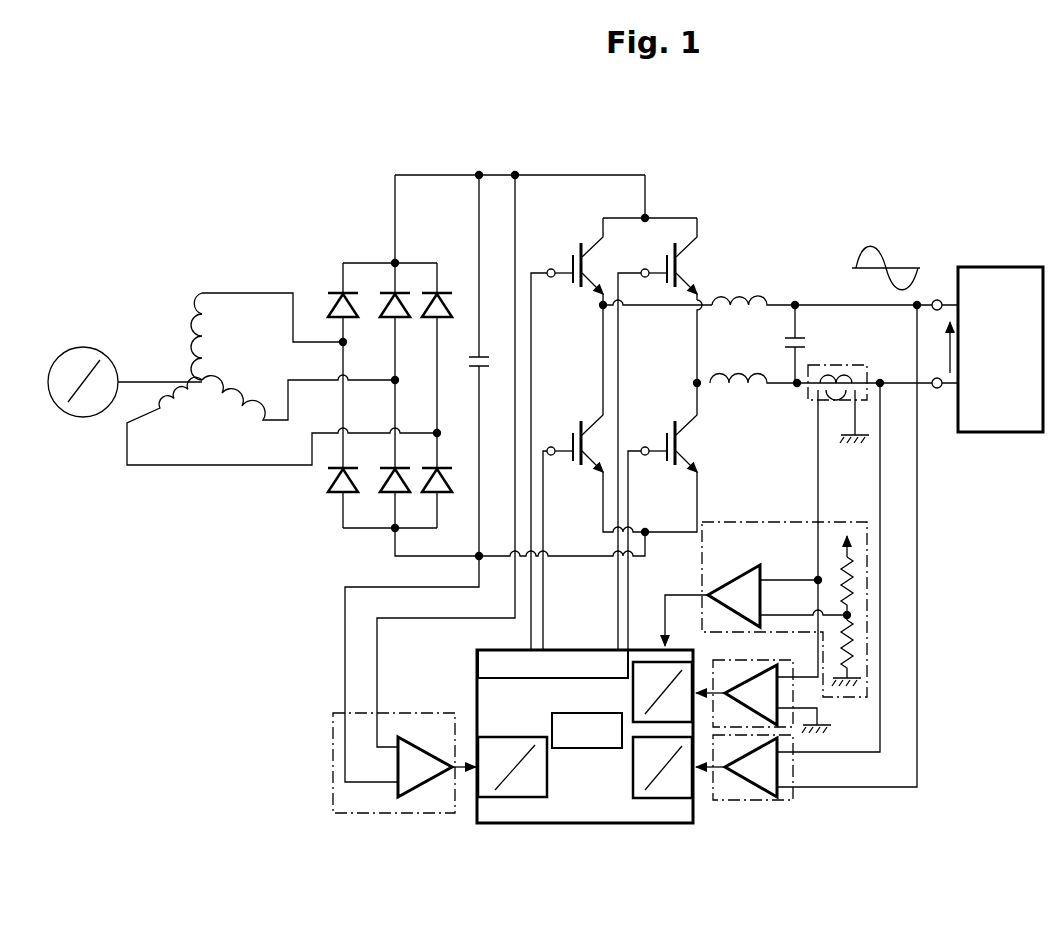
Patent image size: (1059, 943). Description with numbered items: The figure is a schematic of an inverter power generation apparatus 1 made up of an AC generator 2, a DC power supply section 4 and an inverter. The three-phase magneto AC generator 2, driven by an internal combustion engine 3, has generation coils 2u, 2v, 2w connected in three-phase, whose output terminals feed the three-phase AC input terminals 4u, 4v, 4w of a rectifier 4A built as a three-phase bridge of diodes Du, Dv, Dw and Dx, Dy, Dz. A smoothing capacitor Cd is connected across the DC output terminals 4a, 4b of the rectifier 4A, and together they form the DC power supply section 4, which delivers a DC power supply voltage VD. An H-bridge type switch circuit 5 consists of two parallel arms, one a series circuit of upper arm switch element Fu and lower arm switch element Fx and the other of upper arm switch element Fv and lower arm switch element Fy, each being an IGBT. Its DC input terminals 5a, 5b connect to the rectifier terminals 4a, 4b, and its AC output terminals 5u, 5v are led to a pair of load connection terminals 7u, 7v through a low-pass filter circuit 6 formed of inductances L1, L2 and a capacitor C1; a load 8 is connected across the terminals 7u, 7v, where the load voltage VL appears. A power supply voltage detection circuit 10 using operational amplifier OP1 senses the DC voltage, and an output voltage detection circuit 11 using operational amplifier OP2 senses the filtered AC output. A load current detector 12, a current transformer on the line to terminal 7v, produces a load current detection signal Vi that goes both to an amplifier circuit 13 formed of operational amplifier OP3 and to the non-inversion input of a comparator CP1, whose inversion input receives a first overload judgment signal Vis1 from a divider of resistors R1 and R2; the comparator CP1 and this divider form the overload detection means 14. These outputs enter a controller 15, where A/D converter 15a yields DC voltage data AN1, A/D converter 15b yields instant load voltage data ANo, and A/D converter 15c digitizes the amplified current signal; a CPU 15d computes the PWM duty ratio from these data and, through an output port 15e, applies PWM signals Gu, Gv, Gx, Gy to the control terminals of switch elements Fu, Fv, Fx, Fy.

The inverter power generation apparatus 1 is at (733, 192).
The three-phase magneto AC generator 2 is at (282, 338).
The generation coil 2u is at (207, 318).
The generation coil 2v is at (248, 402).
The generation coil 2w is at (172, 404).
The internal combustion engine 3 is at (86, 347).
The DC power supply section 4 is at (468, 355).
The rectifier 4A is at (382, 366).
The DC output terminal of the rectifier 4a is at (393, 240).
The DC output terminal of the rectifier 4b is at (501, 558).
The three-phase AC input terminal of the rectifier 4u is at (346, 344).
The three-phase AC input terminal of the rectifier 4v is at (398, 383).
The three-phase AC input terminal of the rectifier 4w is at (440, 432).
The H-bridge type switch circuit 5 is at (631, 371).
The DC input terminal of the switch circuit 5a is at (647, 206).
The DC input terminal of the switch circuit 5b is at (649, 537).
The AC output terminal of the switch circuit 5u is at (599, 306).
The AC output terminal of the switch circuit 5v is at (694, 381).
The low-pass filter circuit 6 is at (834, 325).
The load connection terminal 7u is at (937, 299).
The load connection terminal 7v is at (936, 389).
The load 8 is at (996, 266).
The power supply voltage detection circuit 10 is at (405, 520).
The output voltage detection circuit 11 is at (808, 577).
The load current detector 12 is at (870, 374).
The amplifier circuit 13 is at (832, 569).
The overload detection means 14 is at (813, 584).
The controller 15 is at (551, 736).
The A/D converter 15a is at (513, 798).
The A/D converter 15b is at (633, 775).
The A/D converter 15c is at (635, 700).
The CPU 15d is at (556, 715).
The output port 15e is at (610, 650).
The diode Du is at (333, 300).
The diode Dv is at (405, 290).
The diode Dw is at (445, 295).
The diode Dx is at (333, 480).
The diode Dy is at (385, 492).
The diode Dz is at (445, 497).
The smoothing capacitor Cd is at (474, 359).
The DC power supply voltage VD is at (520, 158).
The upper arm switch element Fu is at (598, 246).
The upper arm switch element Fv is at (688, 253).
The lower arm switch element Fx is at (596, 421).
The lower arm switch element Fy is at (690, 436).
The PWM signal Gu is at (545, 444).
The PWM signal Gv is at (631, 444).
The PWM signal Gx is at (546, 533).
The PWM signal Gy is at (636, 533).
The inductance L1 is at (747, 310).
The inductance L2 is at (752, 390).
The capacitor C1 is at (806, 340).
The load voltage VL is at (935, 347).
The comparator CP1 is at (726, 588).
The load current detection signal Vi is at (791, 564).
The first overload judgment signal Vis1 is at (805, 602).
The resistor R1 is at (852, 575).
The resistor R2 is at (852, 645).
The operational amplifier OP1 is at (420, 744).
The operational amplifier OP2 is at (742, 776).
The operational amplifier OP3 is at (795, 711).
The data of the DC power supply voltage AN1 is at (462, 772).
The instant data of the load voltage ANo is at (705, 772).